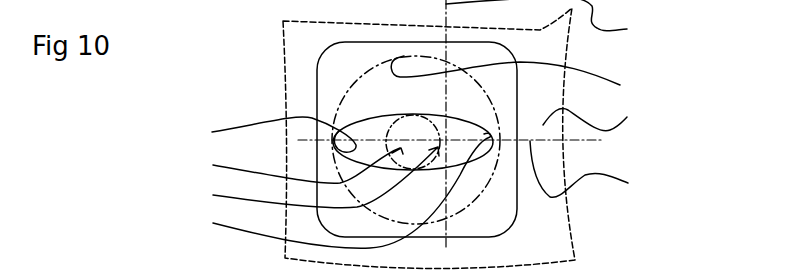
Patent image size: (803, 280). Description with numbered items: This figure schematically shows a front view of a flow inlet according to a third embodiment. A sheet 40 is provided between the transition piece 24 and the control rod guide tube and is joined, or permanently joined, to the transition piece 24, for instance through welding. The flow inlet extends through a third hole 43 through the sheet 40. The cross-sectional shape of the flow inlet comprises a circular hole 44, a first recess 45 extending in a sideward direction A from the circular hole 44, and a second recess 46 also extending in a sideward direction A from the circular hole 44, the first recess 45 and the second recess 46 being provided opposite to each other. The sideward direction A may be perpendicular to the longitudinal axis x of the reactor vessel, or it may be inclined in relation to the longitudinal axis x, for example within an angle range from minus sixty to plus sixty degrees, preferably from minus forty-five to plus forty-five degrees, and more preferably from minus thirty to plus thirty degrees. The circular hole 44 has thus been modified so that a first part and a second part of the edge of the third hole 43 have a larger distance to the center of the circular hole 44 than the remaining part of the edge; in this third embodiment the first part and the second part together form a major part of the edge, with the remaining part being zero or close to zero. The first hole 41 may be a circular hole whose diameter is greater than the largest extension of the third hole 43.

The sheet 40 is at (330, 78).
The first hole 41 is at (525, 81).
The first recess 45 is at (268, 134).
The third hole 43 is at (291, 165).
The circular hole 44 is at (309, 177).
The second recess 46 is at (335, 190).
The transition piece 24 is at (602, 123).
The longitudinal axis x is at (545, 21).
The sideward direction A is at (588, 170).